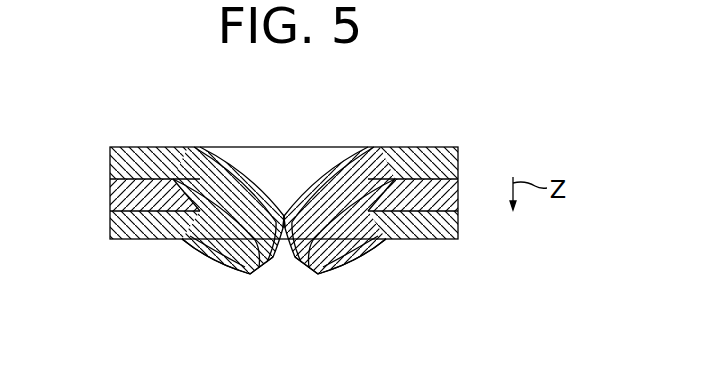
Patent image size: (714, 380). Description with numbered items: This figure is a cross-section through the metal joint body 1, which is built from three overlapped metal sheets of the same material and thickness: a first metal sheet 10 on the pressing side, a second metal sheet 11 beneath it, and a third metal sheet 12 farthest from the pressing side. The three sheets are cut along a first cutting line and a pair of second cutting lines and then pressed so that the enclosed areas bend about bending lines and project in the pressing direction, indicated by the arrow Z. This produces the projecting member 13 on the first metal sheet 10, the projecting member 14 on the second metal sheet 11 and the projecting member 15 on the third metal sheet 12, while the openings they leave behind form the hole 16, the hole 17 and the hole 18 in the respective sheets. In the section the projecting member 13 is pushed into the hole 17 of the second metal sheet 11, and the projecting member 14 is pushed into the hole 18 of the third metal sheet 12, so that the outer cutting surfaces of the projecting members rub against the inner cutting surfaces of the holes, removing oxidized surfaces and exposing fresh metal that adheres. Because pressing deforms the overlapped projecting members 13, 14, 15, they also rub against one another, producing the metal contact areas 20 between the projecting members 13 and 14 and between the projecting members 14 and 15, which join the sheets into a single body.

The metal joint body 1 is at (447, 135).
The first metal sheet 10 is at (135, 150).
The second metal sheet 11 is at (117, 188).
The third metal sheet 12 is at (116, 241).
The projecting member 13 is at (292, 176).
The projecting member 14 is at (233, 262).
The projecting member 15 is at (262, 273).
The hole 16 is at (316, 156).
The hole 17 is at (283, 232).
The hole 18 is at (289, 230).
The metal contact area 20 is at (215, 253).